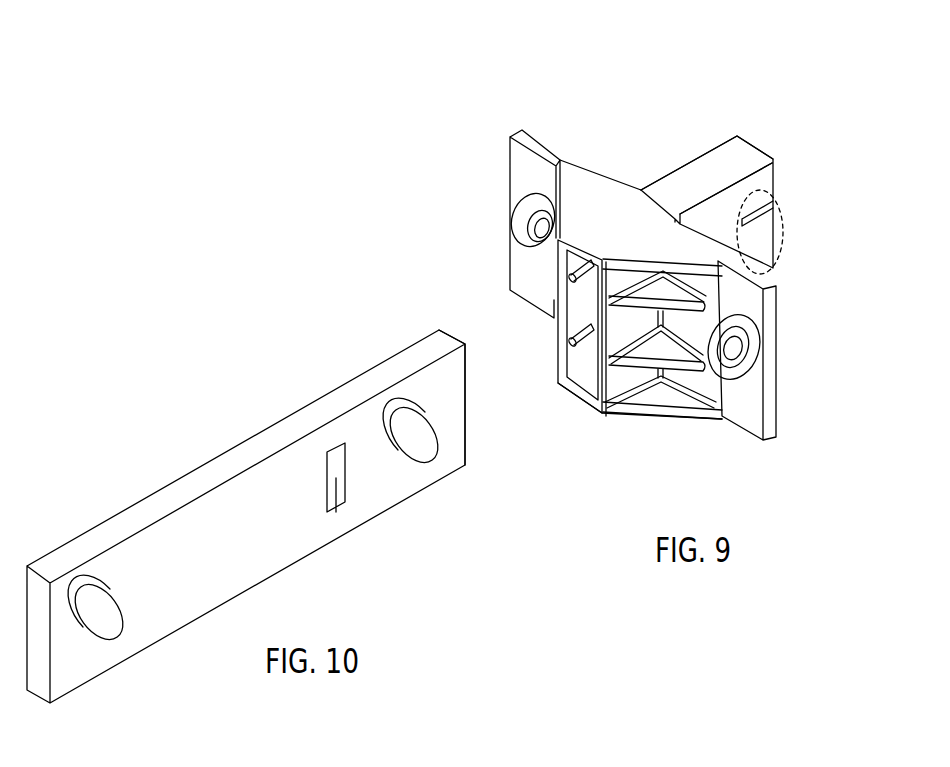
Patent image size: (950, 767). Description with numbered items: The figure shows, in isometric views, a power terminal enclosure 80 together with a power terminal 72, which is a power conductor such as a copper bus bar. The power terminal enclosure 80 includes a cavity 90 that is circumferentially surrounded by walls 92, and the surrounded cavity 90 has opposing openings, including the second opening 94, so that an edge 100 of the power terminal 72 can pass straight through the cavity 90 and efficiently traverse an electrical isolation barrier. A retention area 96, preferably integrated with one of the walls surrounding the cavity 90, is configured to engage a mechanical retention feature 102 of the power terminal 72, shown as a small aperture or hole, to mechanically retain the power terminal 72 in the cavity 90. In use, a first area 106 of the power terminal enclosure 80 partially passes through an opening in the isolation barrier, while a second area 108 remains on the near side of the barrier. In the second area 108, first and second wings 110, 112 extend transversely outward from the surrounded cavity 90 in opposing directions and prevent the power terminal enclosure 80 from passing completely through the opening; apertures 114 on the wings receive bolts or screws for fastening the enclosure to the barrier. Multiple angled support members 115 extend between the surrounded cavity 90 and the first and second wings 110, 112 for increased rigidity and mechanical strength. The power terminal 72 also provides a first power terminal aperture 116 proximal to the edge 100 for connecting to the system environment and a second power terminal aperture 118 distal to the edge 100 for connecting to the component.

In FIG. 10, the power terminal 72 is at (268, 520).
In FIG. 9, the power terminal enclosure 80 is at (483, 88).
In FIG. 9, the cavity 90 is at (612, 285).
In FIG. 9, the walls 92 is at (587, 377).
In FIG. 9, the second opening 94 is at (757, 148).
In FIG. 9, the retention area 96 is at (784, 215).
In FIG. 10, the edge 100 is at (463, 442).
In FIG. 10, the mechanical retention feature 102 is at (337, 480).
In FIG. 9, the first area 106 is at (753, 158).
In FIG. 9, the second area 108 is at (627, 452).
In FIG. 9, the first wing 110 is at (520, 187).
In FIG. 9, the second wing 112 is at (748, 302).
In FIG. 9, the apertures 114 is at (533, 231).
In FIG. 9, the angled support members 115 is at (674, 290).
In FIG. 10, the first power terminal aperture 116 is at (417, 435).
In FIG. 10, the second power terminal aperture 118 is at (100, 625).